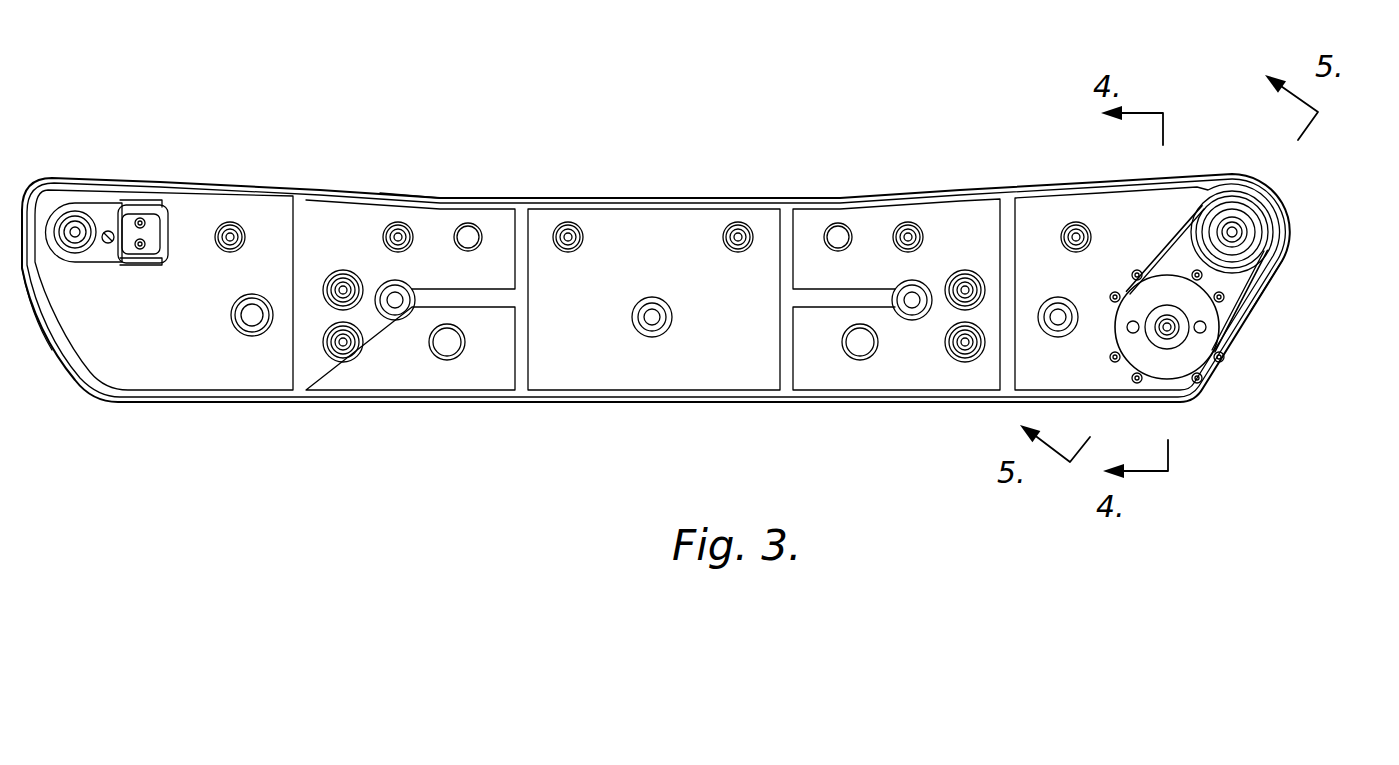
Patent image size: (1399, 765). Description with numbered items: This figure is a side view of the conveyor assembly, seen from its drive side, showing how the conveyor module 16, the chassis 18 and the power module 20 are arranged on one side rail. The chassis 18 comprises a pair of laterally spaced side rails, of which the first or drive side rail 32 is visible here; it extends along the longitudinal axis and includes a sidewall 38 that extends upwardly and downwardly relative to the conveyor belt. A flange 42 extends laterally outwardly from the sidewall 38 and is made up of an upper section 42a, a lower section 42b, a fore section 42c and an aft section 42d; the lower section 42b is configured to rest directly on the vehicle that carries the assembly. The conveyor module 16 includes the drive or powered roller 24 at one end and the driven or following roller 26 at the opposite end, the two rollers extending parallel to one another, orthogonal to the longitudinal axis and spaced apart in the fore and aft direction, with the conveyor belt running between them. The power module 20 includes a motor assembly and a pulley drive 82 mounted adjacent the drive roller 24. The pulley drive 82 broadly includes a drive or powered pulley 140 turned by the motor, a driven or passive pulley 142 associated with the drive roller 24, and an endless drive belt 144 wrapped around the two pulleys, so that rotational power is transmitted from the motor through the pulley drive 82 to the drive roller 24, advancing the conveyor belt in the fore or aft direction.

The conveyor module 16 is at (870, 113).
The chassis 18 is at (182, 173).
The power module 20 is at (1190, 390).
The drive roller 24 is at (1236, 232).
The driven roller 26 is at (75, 228).
The first side rail 32 is at (637, 230).
The sidewall 38 is at (672, 278).
The flange 42 is at (553, 203).
The upper section 42a is at (434, 197).
The lower section 42b is at (563, 403).
The fore section 42c is at (1288, 275).
The aft section 42d is at (29, 318).
The pulley drive 82 is at (1271, 189).
The drive pulley 140 is at (1210, 333).
The driven pulley 142 is at (1227, 203).
The drive belt 144 is at (1162, 248).